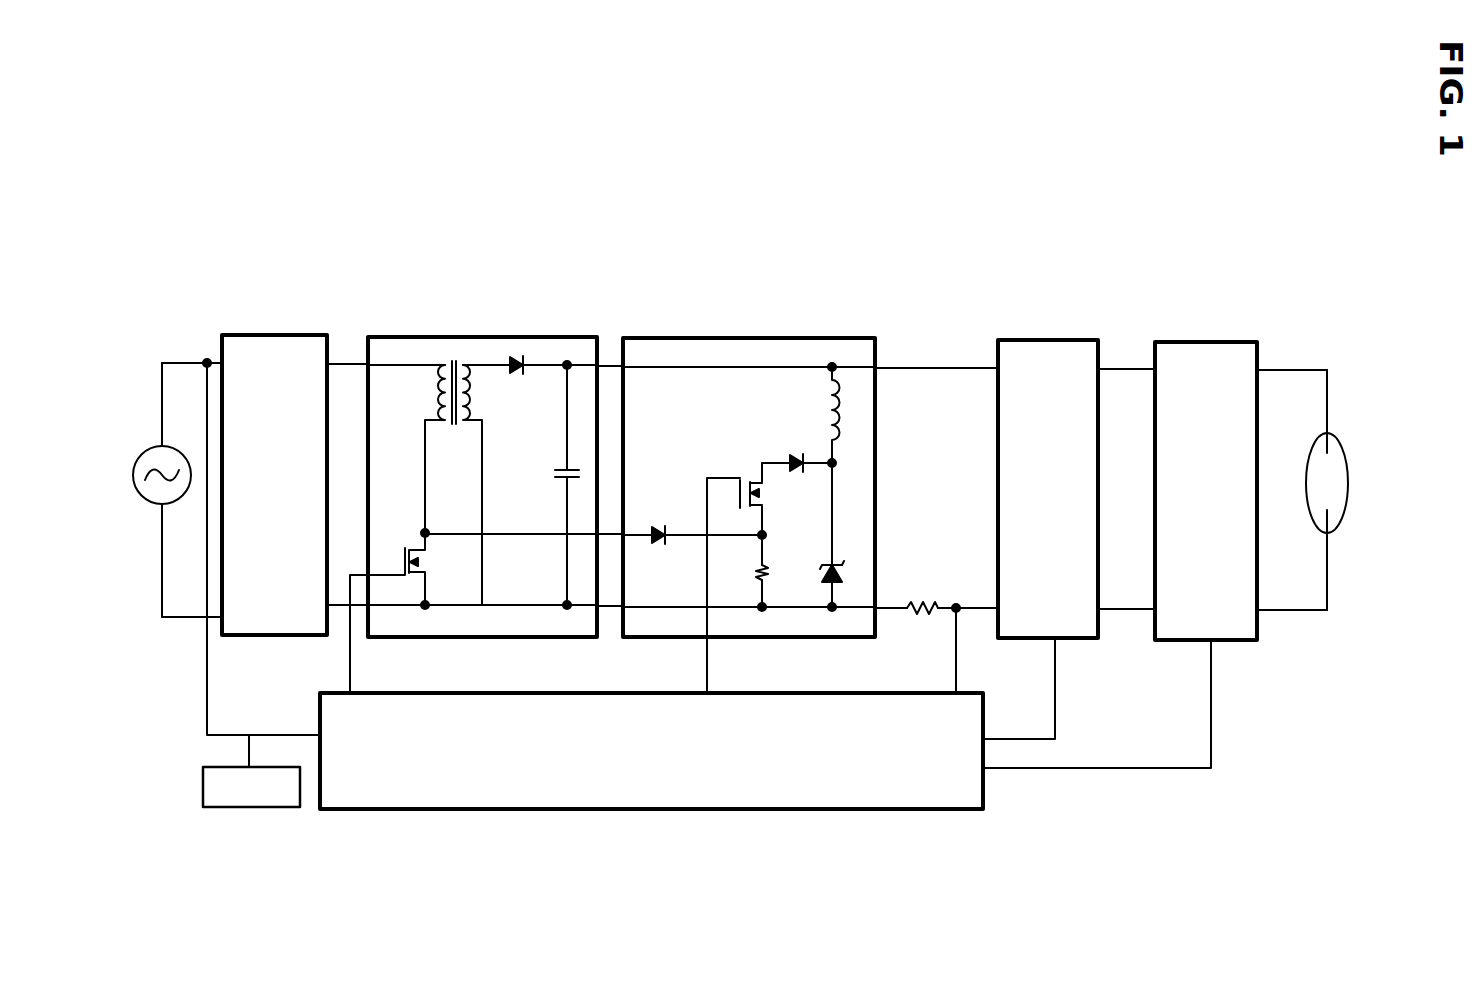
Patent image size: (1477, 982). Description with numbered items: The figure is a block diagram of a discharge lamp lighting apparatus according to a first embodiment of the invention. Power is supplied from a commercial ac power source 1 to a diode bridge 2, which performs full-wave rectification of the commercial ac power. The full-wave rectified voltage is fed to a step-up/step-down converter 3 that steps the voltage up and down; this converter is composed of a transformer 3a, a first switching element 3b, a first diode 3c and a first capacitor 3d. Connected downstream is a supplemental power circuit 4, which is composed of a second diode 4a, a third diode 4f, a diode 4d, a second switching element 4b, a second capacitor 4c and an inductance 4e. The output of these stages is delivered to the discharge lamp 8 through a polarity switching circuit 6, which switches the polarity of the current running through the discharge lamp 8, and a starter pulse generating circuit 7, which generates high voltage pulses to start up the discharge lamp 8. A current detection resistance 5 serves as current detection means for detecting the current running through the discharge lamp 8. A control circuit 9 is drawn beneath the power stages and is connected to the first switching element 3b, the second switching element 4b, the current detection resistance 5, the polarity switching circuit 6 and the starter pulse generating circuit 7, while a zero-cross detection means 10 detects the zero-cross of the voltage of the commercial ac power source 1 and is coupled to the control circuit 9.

The commercial ac power source 1 is at (141, 455).
The diode bridge 2 is at (263, 335).
The step-up/step-down converter 3 is at (473, 480).
The transformer 3a is at (440, 384).
The first switching element 3b is at (412, 547).
The first diode 3c is at (518, 378).
The first capacitor 3d is at (555, 473).
The supplemental power circuit 4 is at (749, 480).
The second diode 4a is at (665, 522).
The second switching element 4b is at (748, 476).
The second capacitor 4c is at (758, 572).
The diode 4d is at (822, 570).
The inductance 4e is at (826, 410).
The third diode 4f is at (794, 460).
The current detection resistance 5 is at (915, 598).
The polarity switching circuit 6 is at (1032, 340).
The starter pulse generating circuit 7 is at (1195, 342).
The discharge lamp 8 is at (1348, 468).
The control circuit 9 is at (362, 812).
The zero-cross detection means 10 is at (250, 810).